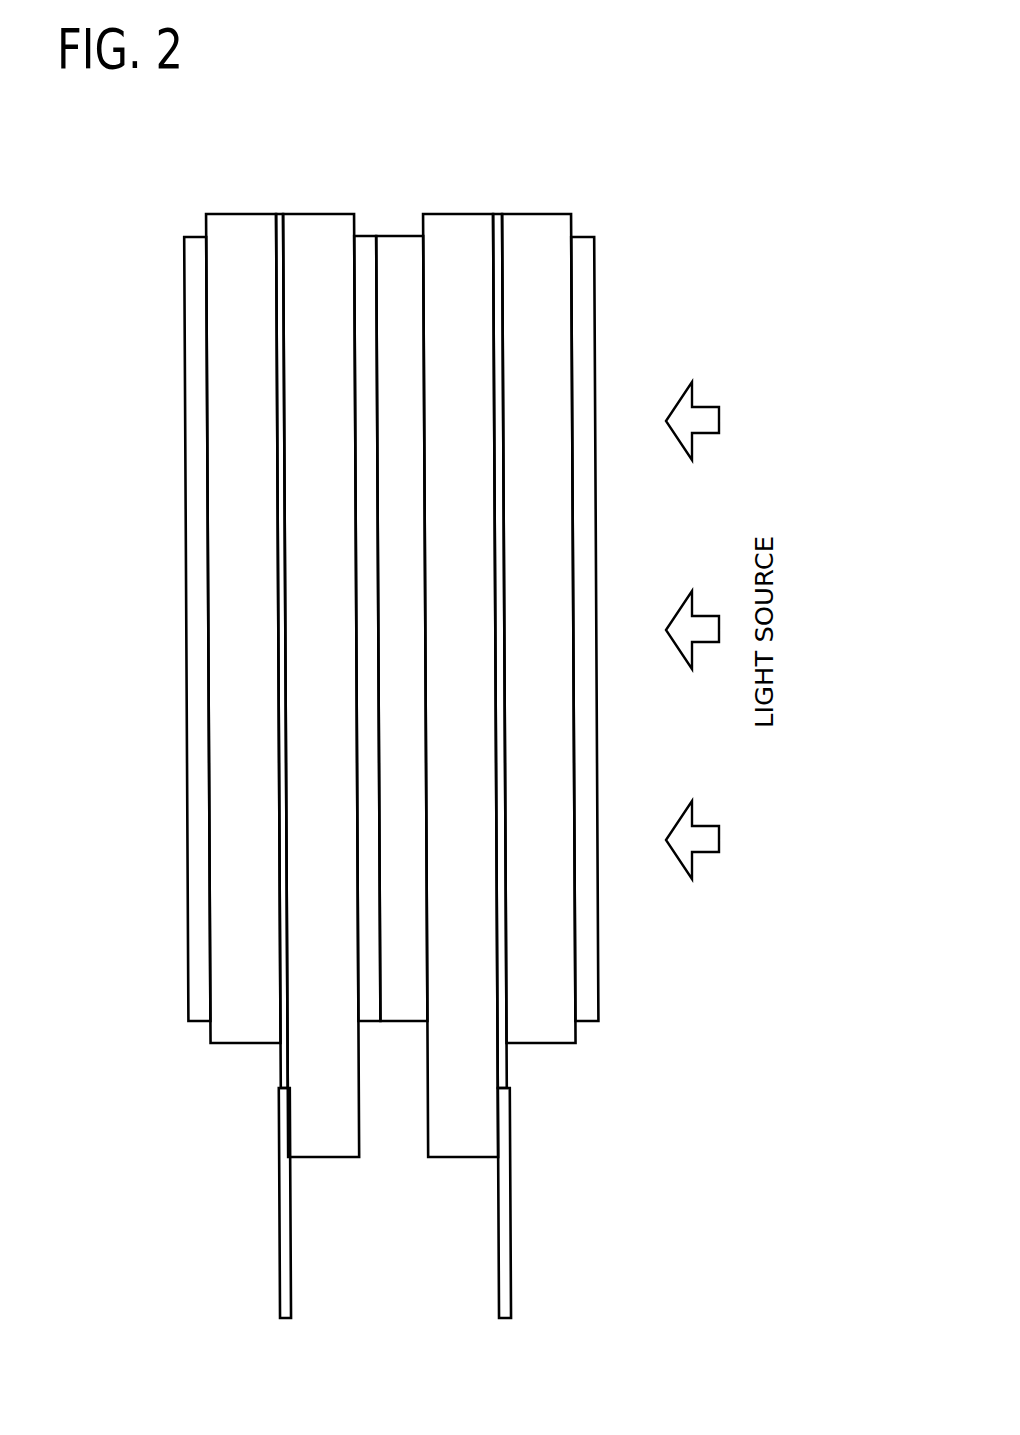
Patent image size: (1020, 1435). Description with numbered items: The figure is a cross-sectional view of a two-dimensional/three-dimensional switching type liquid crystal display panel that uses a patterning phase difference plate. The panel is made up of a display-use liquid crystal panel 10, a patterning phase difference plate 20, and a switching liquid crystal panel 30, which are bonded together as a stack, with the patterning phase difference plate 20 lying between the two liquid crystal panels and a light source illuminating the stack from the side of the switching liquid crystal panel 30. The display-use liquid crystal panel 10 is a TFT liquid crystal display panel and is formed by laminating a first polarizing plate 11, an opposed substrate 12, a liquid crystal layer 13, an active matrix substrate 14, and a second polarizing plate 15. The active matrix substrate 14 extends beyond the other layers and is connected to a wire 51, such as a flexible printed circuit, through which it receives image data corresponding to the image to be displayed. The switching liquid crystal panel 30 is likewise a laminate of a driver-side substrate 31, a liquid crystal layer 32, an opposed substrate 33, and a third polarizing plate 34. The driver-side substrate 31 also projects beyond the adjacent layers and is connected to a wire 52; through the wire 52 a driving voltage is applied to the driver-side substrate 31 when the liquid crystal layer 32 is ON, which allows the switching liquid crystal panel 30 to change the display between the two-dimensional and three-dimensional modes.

The display-use liquid crystal panel 10 is at (177, 124).
The first polarizing plate 11 is at (197, 235).
The opposed substrate 12 is at (248, 213).
The liquid crystal layer 13 is at (282, 213).
The active matrix substrate 14 is at (322, 213).
The second polarizing plate 15 is at (367, 235).
The patterning phase difference plate 20 is at (410, 235).
The switching liquid crystal panel 30 is at (595, 124).
The driver-side substrate 31 is at (460, 213).
The liquid crystal layer 32 is at (500, 213).
The opposed substrate 33 is at (533, 213).
The third polarizing plate 34 is at (585, 235).
The wire 51 is at (273, 1313).
The wire 52 is at (490, 1313).